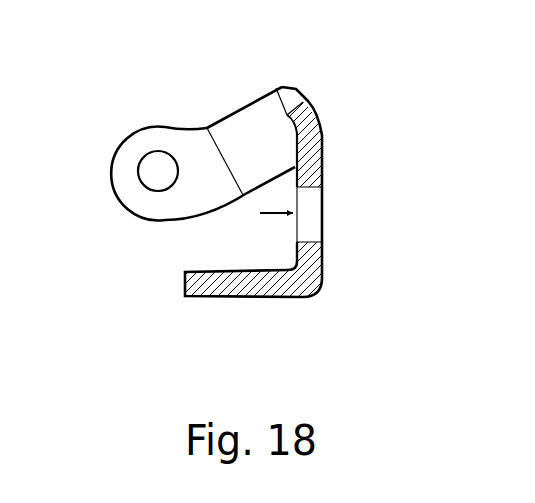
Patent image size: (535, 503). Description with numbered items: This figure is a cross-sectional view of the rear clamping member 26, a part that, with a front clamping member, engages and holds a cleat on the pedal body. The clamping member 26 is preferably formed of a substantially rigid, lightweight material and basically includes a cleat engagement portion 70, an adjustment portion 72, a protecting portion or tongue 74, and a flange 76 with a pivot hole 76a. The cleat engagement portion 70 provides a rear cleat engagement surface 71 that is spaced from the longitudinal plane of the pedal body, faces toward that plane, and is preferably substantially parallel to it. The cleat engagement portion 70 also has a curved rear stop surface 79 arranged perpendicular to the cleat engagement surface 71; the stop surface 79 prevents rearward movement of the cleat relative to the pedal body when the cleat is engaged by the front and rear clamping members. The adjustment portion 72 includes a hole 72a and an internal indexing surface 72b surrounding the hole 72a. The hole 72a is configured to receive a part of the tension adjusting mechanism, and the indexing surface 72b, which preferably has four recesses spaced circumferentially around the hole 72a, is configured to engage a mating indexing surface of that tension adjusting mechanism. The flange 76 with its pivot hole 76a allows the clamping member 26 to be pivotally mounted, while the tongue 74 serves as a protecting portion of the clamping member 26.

The rear clamping member 26 is at (338, 122).
The cleat engagement portion 70 is at (315, 102).
The rear cleat engagement surface 71 is at (287, 115).
The adjustment portion 72 is at (324, 167).
The hole 72a is at (305, 188).
The internal indexing surface 72b is at (298, 248).
The protecting portion or tongue 74 is at (242, 300).
The flange 76 is at (200, 125).
The pivot hole 76a is at (160, 153).
The curved rear stop surface 79 is at (296, 105).